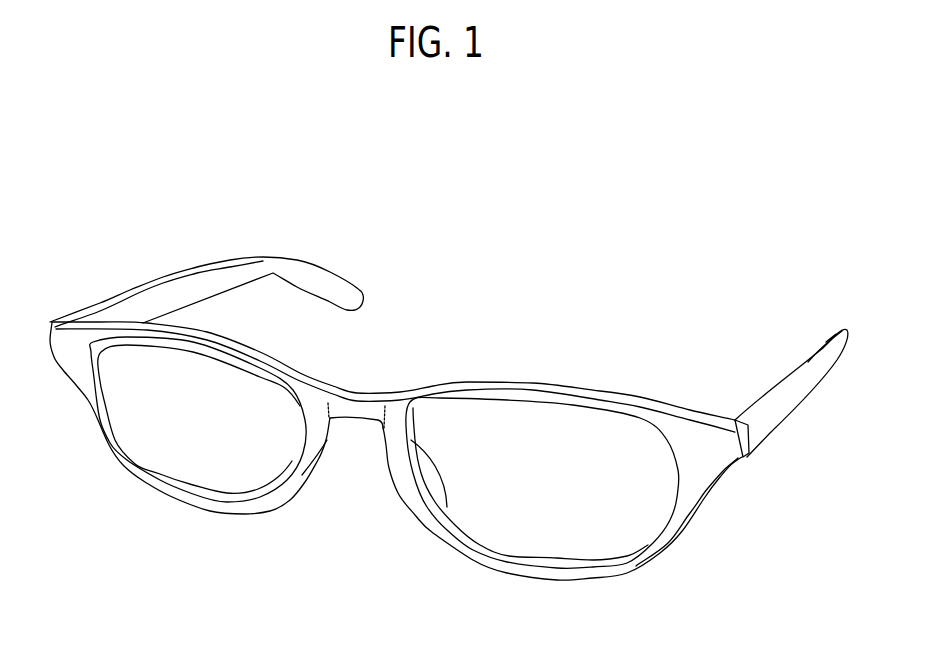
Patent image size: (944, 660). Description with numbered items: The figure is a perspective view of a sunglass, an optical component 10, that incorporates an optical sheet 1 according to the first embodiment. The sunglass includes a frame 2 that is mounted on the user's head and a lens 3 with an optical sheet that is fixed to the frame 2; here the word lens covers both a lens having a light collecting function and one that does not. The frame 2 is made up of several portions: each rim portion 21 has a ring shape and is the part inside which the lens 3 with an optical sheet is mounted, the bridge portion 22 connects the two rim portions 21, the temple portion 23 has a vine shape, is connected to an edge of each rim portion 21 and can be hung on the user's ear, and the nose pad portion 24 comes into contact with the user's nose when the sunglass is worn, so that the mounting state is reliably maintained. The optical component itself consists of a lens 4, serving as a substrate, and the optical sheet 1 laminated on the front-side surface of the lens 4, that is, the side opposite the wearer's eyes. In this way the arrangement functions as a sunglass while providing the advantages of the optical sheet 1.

The optical component 10 is at (684, 156).
The optical sheet 1 is at (207, 468).
The frame 2 is at (662, 386).
The lens with an optical sheet 3 is at (136, 436).
The lens 4 is at (127, 403).
The rim portion 21 is at (233, 353).
The bridge portion 22 is at (356, 392).
The temple portion 23 is at (160, 278).
The nose pad portion 24 is at (310, 455).